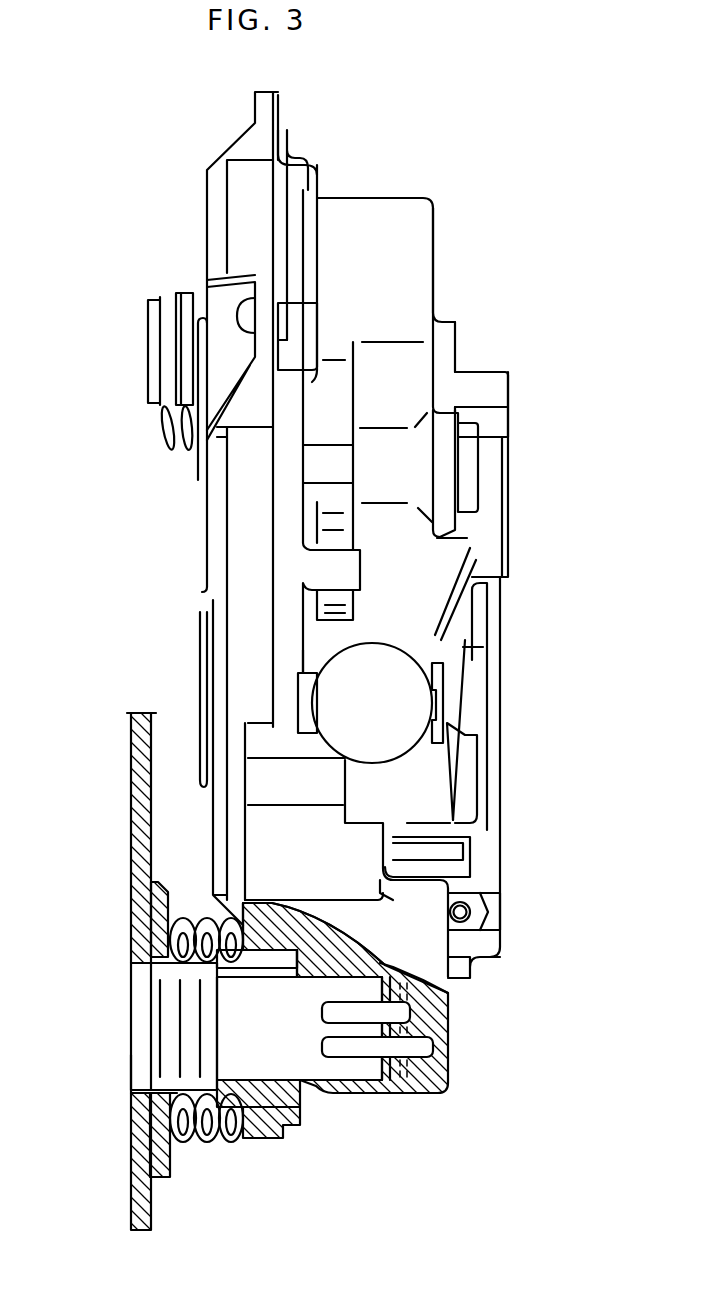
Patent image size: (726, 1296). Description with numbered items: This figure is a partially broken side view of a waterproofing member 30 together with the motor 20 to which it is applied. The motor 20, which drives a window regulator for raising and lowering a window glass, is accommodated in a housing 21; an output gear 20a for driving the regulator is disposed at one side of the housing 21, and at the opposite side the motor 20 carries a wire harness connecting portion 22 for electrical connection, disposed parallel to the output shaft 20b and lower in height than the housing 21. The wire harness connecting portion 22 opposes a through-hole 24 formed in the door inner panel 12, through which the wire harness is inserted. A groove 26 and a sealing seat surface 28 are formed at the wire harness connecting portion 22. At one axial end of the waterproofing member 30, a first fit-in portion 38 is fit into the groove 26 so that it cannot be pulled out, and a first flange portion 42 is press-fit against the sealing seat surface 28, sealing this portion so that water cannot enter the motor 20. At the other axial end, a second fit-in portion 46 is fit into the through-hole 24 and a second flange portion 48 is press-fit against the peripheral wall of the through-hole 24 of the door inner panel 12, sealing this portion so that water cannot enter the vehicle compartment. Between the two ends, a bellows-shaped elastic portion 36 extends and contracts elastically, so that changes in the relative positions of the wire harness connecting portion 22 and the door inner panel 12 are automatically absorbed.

The door inner panel 12 is at (131, 757).
The motor 20 is at (468, 297).
The output gear 20a is at (493, 392).
The output shaft 20b is at (495, 427).
The housing 21 is at (405, 213).
The wire harness connecting portion 22 is at (350, 1063).
The through-hole 24 is at (131, 972).
The groove 26 is at (287, 1120).
The sealing seat surface 28 is at (249, 1140).
The waterproofing member 30 is at (203, 1150).
The elastic portion 36 is at (185, 912).
The first fit-in portion 38 is at (264, 966).
The first flange portion 42 is at (245, 925).
The second fit-in portion 46 is at (131, 1070).
The second flange portion 48 is at (166, 1172).